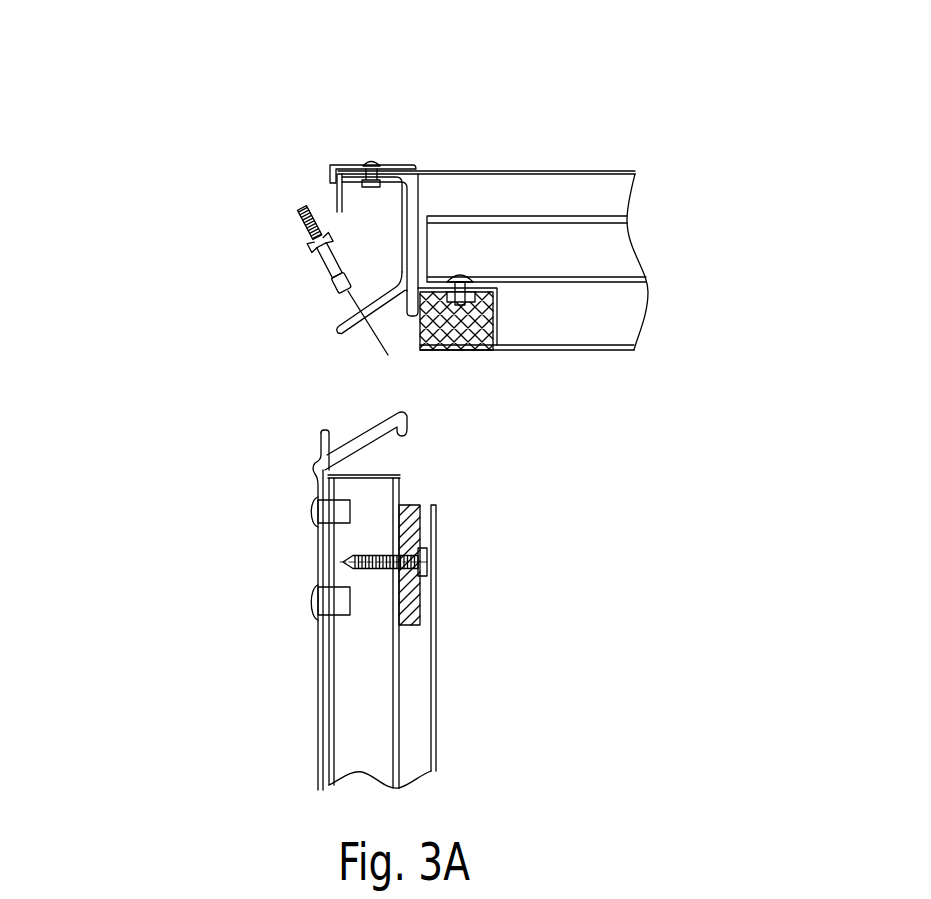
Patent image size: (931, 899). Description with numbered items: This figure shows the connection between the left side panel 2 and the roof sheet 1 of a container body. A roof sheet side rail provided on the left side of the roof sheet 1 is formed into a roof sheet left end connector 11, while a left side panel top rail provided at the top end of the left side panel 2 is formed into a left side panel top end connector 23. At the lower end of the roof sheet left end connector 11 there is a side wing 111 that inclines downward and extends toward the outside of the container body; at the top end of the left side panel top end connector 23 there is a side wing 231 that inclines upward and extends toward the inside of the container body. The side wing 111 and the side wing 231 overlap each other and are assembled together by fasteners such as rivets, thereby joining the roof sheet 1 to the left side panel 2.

The roof sheet 1 is at (534, 245).
The roof sheet left end connector 11 is at (410, 239).
The side wing 111 is at (334, 326).
The left side panel 2 is at (370, 690).
The left side panel top end connector 23 is at (325, 562).
The side wing 231 is at (371, 440).